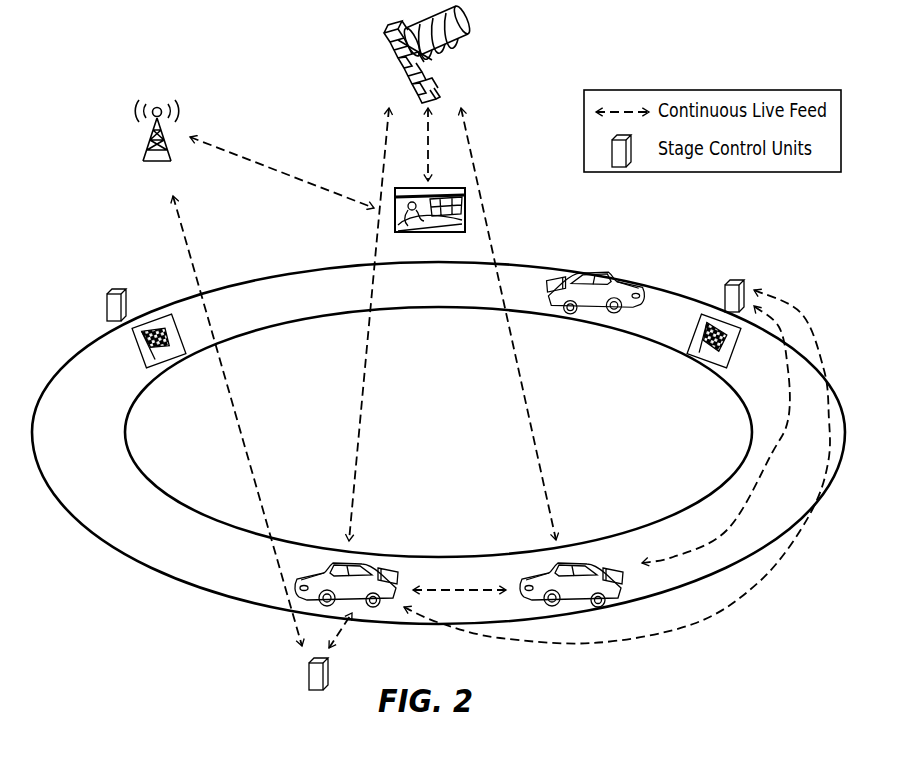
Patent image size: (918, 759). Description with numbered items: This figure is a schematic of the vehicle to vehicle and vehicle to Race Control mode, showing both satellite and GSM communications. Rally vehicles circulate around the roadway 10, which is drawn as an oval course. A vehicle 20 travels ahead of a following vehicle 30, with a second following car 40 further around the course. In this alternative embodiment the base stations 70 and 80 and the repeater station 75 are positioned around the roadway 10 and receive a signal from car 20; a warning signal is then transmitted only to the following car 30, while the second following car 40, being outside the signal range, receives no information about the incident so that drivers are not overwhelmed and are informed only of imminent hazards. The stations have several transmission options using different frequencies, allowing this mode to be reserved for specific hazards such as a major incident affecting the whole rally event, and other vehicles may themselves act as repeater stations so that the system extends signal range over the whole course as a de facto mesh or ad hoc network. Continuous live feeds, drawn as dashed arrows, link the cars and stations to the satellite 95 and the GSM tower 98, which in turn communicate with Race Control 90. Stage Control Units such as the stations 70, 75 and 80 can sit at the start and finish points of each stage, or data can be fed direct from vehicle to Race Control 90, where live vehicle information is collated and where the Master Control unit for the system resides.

The roadway 10 is at (153, 546).
The vehicle 20 is at (358, 572).
The following vehicle 30 is at (577, 563).
The second following car 40 is at (594, 280).
The base station 70 is at (727, 292).
The repeater station 75 is at (309, 670).
The base station 80 is at (110, 300).
The Race Control 90 is at (447, 190).
The satellite 95 is at (462, 20).
The GSM tower 98 is at (147, 140).